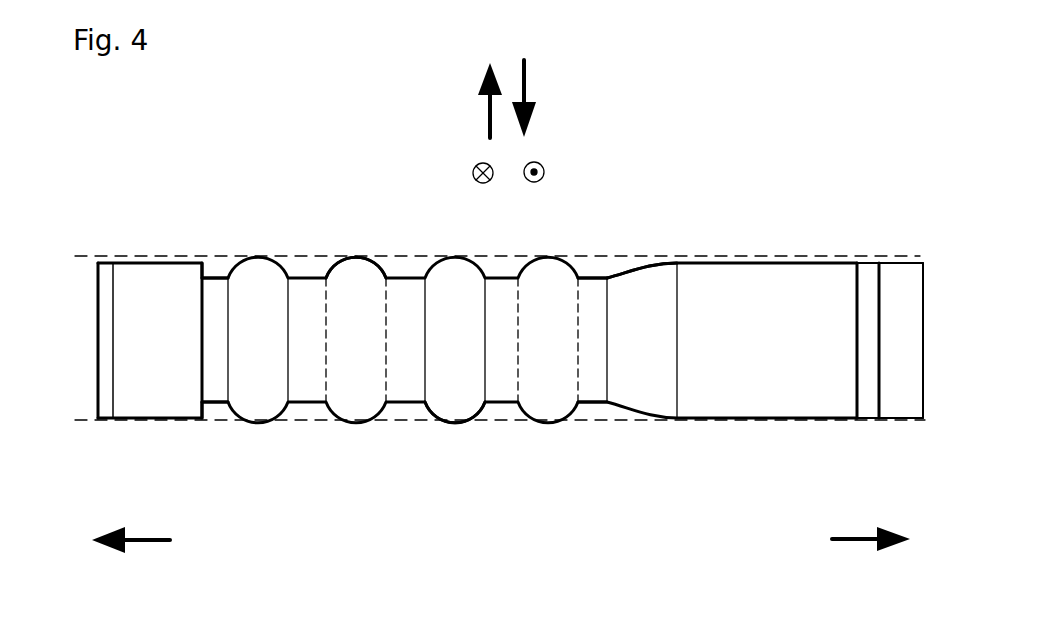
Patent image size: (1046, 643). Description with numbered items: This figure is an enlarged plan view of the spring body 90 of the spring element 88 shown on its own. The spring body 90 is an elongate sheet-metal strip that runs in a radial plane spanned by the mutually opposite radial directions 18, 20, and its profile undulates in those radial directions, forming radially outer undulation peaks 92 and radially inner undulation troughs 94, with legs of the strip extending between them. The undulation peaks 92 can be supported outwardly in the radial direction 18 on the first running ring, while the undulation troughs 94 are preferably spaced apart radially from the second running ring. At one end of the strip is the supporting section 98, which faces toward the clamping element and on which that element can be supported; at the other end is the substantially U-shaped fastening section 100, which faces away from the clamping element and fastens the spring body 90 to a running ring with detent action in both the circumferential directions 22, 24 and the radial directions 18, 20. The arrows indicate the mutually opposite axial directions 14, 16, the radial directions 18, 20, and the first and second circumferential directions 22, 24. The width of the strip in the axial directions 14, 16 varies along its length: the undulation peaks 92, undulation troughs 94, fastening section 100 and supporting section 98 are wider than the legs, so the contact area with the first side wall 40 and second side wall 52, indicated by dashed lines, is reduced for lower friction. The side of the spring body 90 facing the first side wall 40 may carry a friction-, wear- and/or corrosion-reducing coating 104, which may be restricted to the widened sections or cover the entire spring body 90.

The axial direction 14 is at (527, 77).
The axial direction 16 is at (487, 121).
The radial direction 18 is at (537, 160).
The radial direction 20 is at (468, 171).
The first circumferential direction 22 is at (858, 542).
The second circumferential direction 24 is at (138, 543).
The first side wall 40 is at (90, 423).
The second side wall 52 is at (109, 256).
The spring element 88 is at (625, 252).
The spring body 90 is at (589, 276).
The undulation peak 92 is at (267, 298).
The undulation trough 94 is at (214, 380).
The supporting section 98 is at (153, 310).
The fastening section 100 is at (736, 392).
The coating 104 is at (330, 267).